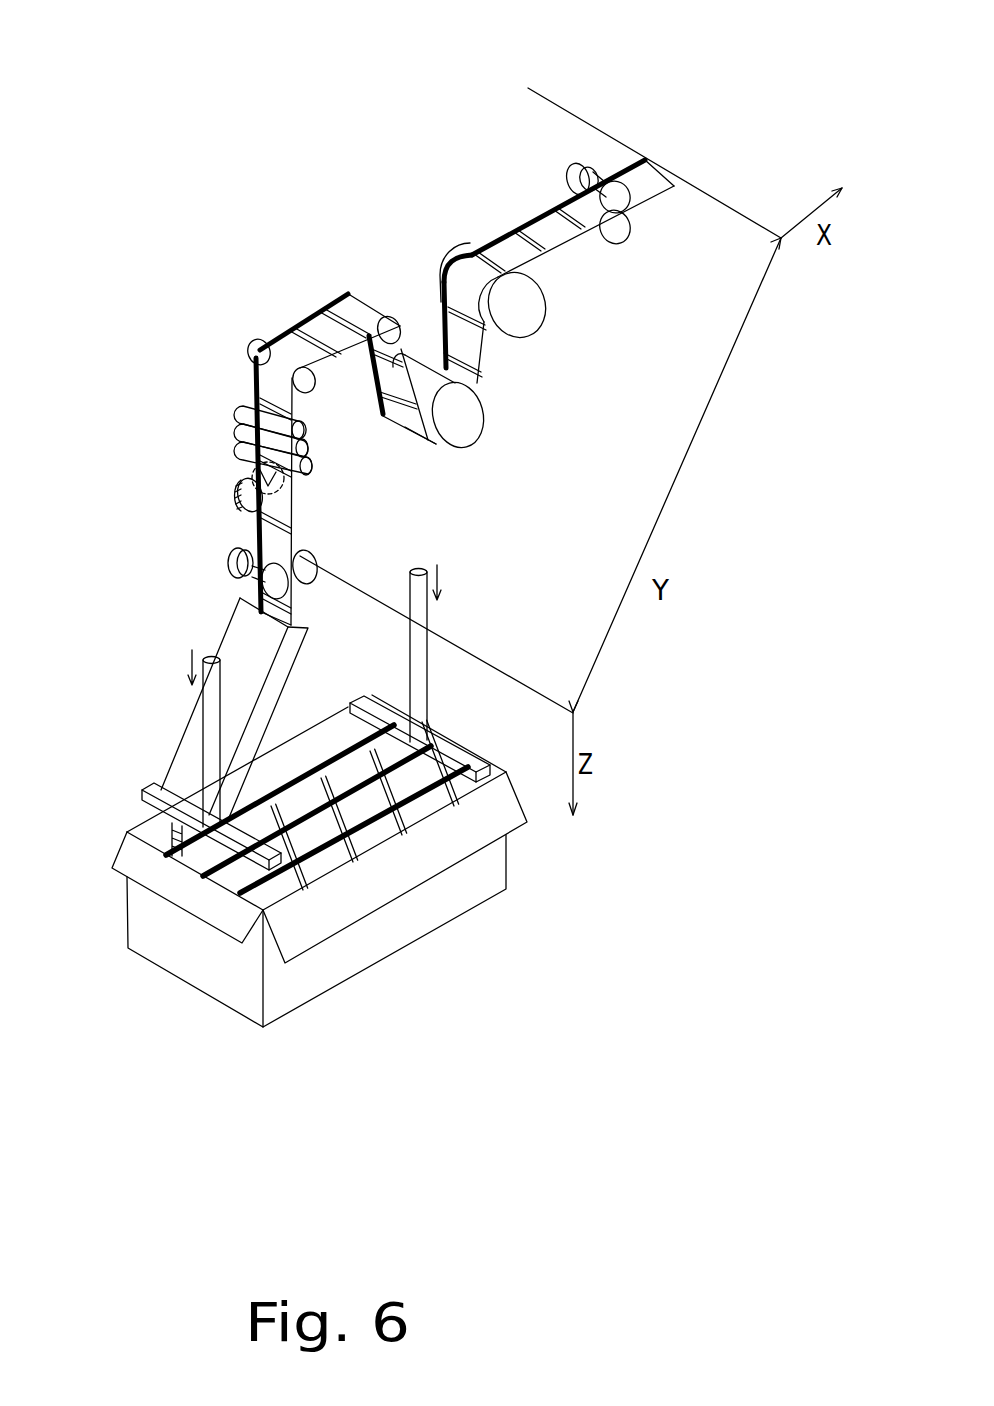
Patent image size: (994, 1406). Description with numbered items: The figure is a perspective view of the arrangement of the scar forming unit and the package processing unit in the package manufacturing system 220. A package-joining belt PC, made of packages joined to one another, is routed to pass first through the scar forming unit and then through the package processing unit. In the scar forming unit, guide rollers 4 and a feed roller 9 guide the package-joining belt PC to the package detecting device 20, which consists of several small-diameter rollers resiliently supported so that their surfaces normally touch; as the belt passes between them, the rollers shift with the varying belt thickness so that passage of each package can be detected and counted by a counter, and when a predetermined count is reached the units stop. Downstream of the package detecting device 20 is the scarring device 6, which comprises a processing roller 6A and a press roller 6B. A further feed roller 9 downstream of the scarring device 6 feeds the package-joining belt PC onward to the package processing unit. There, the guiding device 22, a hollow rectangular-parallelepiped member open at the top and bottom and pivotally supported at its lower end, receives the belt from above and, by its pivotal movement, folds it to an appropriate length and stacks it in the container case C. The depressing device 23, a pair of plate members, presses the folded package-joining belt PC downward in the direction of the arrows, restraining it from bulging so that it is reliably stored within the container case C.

The package manufacturing system 220 is at (712, 94).
The guide rollers 4 is at (335, 294).
The package-joining belt PC is at (517, 232).
The feed roller 9 is at (578, 166).
The package detecting device 20 is at (312, 455).
The scarring device 6 is at (169, 488).
The processing roller 6A is at (233, 488).
The press roller 6B is at (252, 473).
The guiding device 22 is at (243, 639).
The depressing device 23 is at (205, 735).
The container case C is at (417, 917).